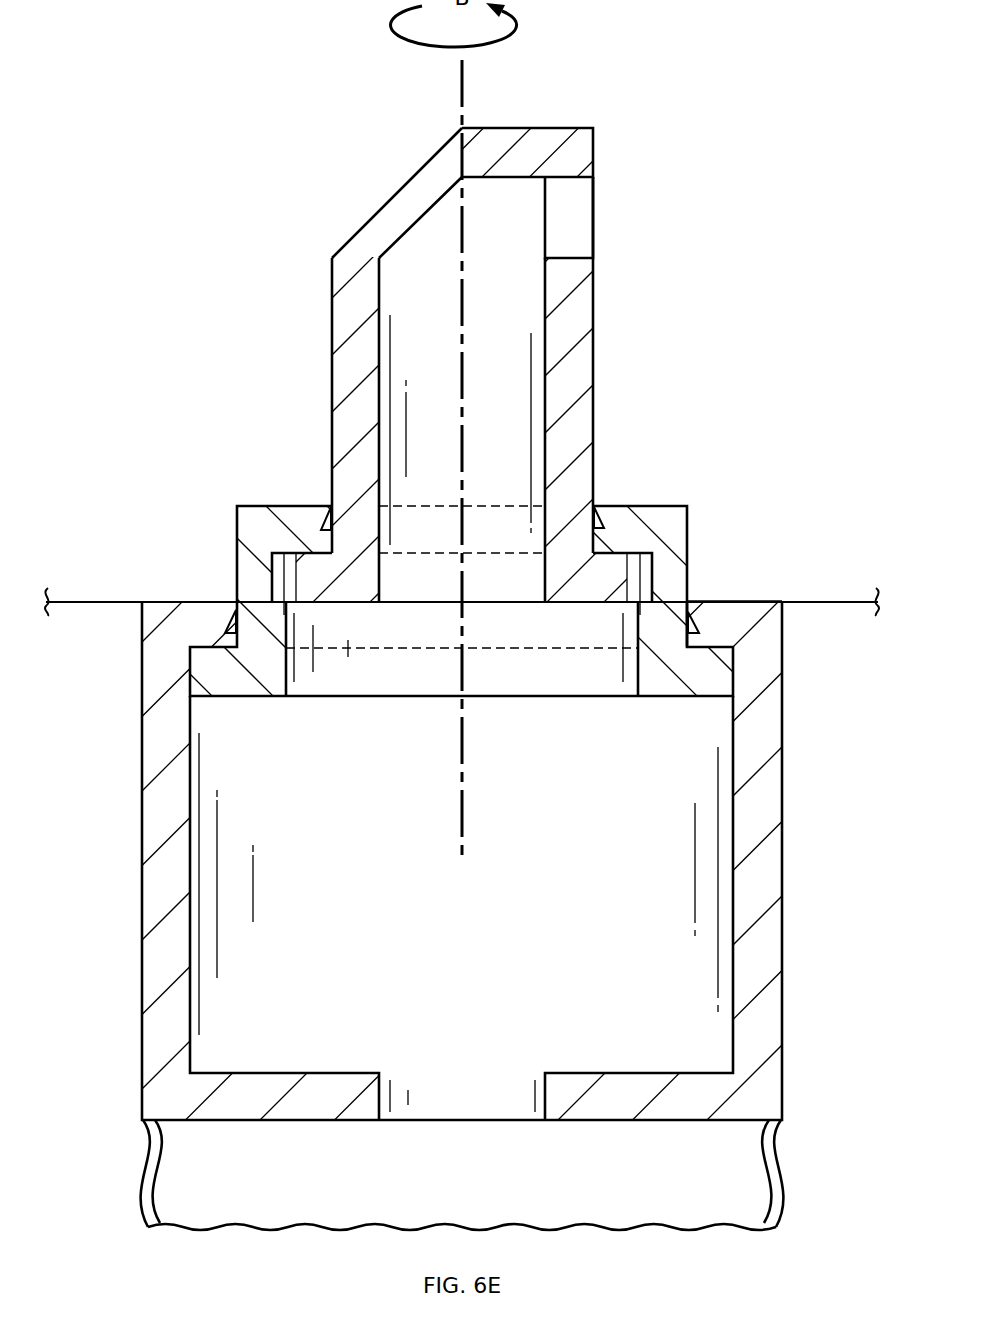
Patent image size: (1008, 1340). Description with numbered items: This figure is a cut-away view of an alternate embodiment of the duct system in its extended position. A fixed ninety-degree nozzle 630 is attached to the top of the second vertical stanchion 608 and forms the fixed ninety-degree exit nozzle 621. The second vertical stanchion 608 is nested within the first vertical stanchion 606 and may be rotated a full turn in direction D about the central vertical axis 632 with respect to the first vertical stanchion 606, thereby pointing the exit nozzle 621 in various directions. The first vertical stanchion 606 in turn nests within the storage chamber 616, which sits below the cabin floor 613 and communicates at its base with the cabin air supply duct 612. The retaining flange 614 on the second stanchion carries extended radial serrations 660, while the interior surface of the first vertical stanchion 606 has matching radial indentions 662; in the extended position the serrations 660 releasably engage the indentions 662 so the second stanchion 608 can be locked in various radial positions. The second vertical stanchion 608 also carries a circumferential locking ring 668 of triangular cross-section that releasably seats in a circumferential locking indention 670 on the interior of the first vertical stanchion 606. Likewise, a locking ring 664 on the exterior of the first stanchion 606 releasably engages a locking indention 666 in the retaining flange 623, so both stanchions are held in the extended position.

The first vertical stanchion 606 is at (677, 533).
The second vertical stanchion 608 is at (593, 412).
The cabin air supply duct 612 is at (766, 1190).
The cabin floor 613 is at (98, 602).
The retaining flange 614 is at (578, 588).
The storage chamber 616 is at (782, 870).
The fixed 90° exit nozzle 621 is at (593, 217).
The retaining flange 623 is at (735, 628).
The fixed 90° nozzle 630 is at (540, 128).
The central vertical axis 632 is at (458, 88).
The radial serrations 660 is at (623, 588).
The radial indentions 662 is at (647, 577).
The locking ring 664 is at (698, 633).
The locking indention 666 is at (695, 633).
The locking ring 668 is at (598, 507).
The locking indention 670 is at (328, 508).